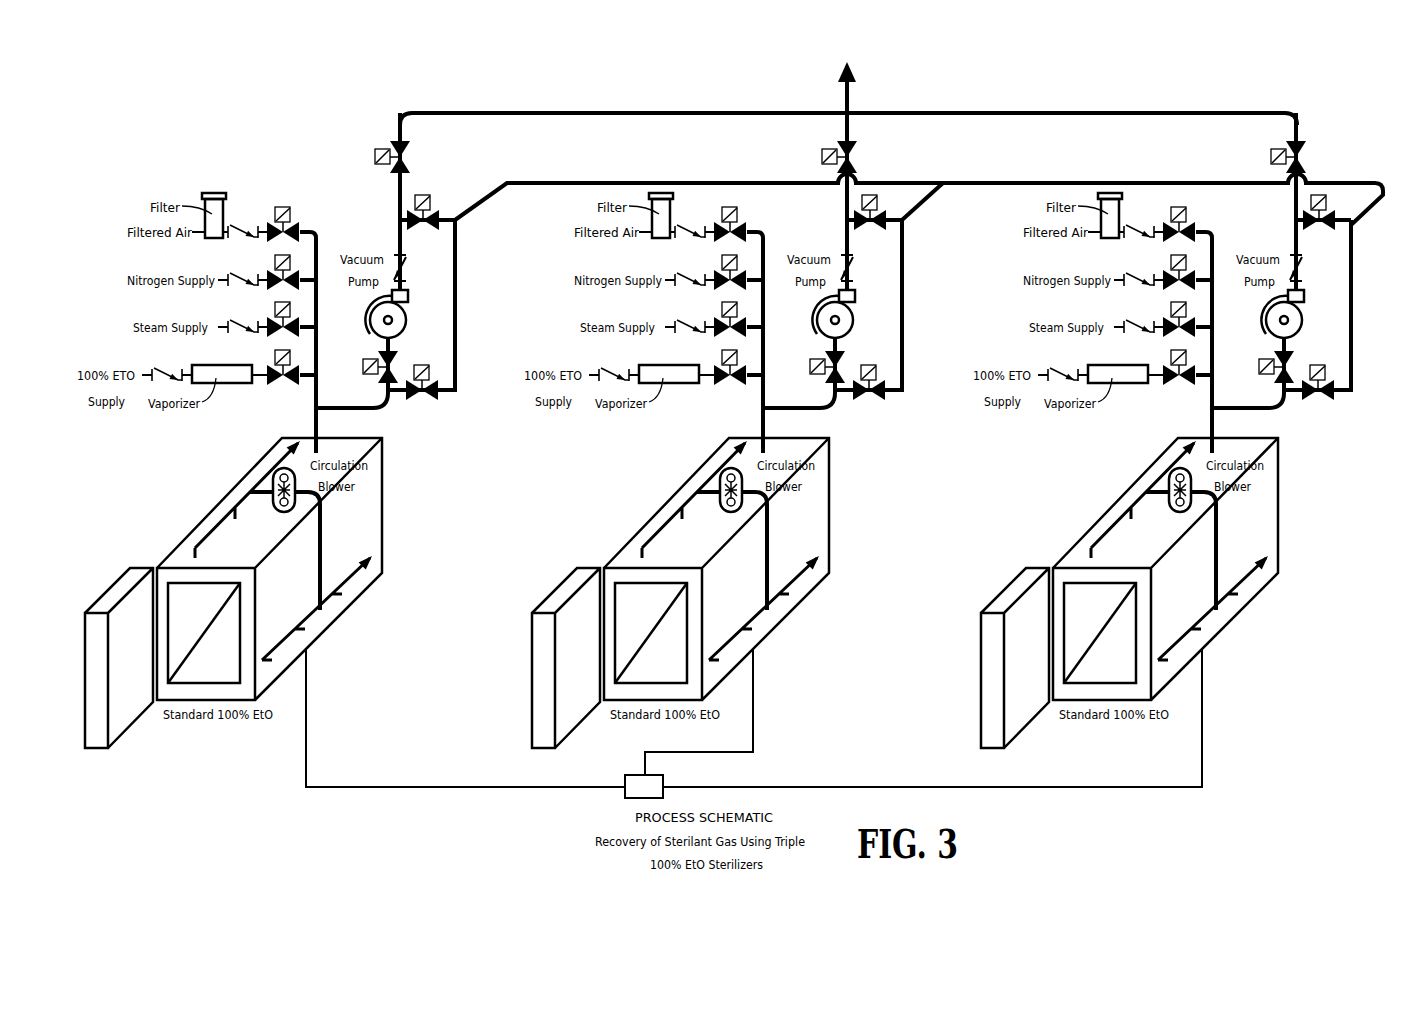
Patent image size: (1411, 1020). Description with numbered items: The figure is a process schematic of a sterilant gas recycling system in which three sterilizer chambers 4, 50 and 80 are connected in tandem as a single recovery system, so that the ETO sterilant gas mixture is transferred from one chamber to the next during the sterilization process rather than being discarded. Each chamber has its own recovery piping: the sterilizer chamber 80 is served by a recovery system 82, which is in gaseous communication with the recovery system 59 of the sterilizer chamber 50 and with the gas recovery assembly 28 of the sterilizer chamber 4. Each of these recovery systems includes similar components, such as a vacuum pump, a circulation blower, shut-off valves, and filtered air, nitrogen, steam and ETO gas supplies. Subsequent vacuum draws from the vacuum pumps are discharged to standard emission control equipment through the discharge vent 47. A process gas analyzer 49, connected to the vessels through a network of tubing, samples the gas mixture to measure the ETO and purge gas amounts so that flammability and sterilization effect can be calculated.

The recovery system 82 is at (340, 180).
The recovery system 59 is at (928, 173).
The gas recovery assembly 28 is at (1340, 172).
The discharge vent 47 is at (853, 62).
The sterilizer chamber 80 is at (382, 488).
The sterilizer chamber 50 is at (832, 505).
The sterilizer chamber 4 is at (1280, 507).
The process gas analyzer 49 is at (665, 786).